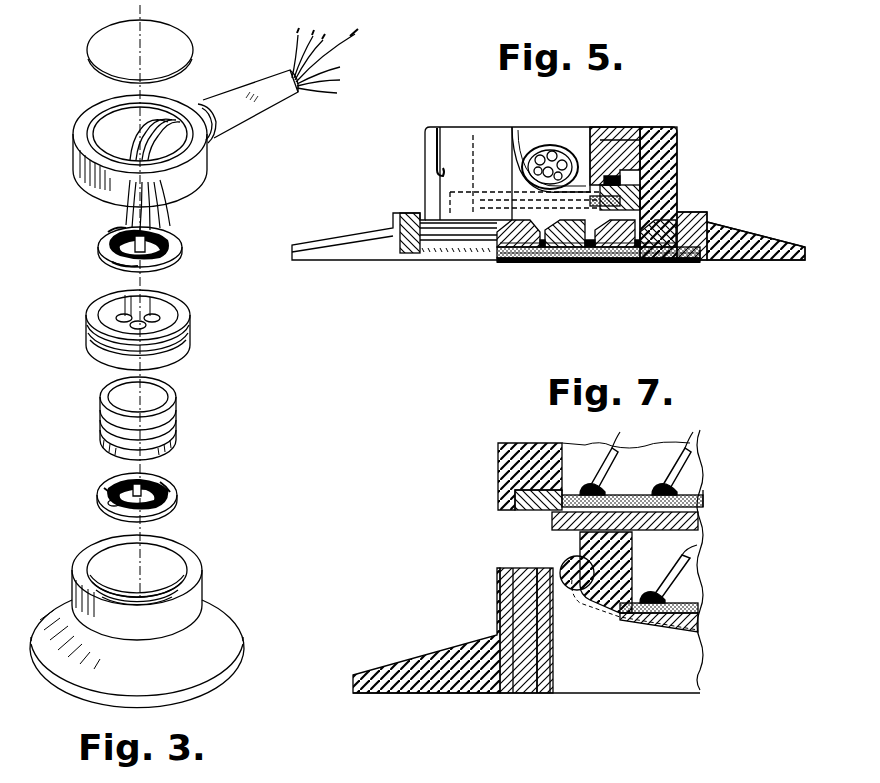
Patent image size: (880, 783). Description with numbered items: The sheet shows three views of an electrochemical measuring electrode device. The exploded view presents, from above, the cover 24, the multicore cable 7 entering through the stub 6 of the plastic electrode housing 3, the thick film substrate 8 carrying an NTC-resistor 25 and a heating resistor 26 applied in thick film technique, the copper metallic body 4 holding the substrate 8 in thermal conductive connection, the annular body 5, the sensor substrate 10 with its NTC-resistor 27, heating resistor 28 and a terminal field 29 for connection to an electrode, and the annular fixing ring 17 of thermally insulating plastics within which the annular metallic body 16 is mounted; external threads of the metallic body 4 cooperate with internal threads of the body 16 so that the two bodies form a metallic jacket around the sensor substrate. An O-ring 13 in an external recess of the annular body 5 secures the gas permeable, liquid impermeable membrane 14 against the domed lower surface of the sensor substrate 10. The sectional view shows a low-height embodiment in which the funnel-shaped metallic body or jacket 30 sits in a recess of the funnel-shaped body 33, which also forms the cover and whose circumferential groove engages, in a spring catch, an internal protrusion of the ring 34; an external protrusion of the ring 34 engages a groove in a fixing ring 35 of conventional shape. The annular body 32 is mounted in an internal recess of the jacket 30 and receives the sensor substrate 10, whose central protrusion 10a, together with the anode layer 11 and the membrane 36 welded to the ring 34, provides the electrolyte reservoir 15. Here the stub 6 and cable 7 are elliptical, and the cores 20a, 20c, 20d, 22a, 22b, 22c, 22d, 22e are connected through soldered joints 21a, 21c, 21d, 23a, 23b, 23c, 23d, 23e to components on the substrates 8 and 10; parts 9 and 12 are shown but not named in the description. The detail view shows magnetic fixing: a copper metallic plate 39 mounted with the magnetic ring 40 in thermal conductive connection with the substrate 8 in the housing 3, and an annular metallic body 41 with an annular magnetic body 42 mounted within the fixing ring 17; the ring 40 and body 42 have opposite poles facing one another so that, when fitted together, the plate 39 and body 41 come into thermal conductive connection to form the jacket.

In FIG. 3, the electrode housing 3 is at (190, 183).
In FIG. 7, the electrode housing 3 is at (498, 458).
In FIG. 3, the metallic body 4 is at (192, 336).
In FIG. 3, the annular body 5 is at (178, 430).
In FIG. 3, the stub 6 is at (198, 104).
In FIG. 5, the stub 6 is at (543, 145).
In FIG. 3, the multicore cable 7 is at (236, 90).
In FIG. 5, the multicore cable 7 is at (560, 142).
In FIG. 3, the thick film substrate 8 is at (180, 256).
In FIG. 5, the thick film substrate 8 is at (680, 185).
In FIG. 7, the thick film substrate 8 is at (703, 500).
In FIG. 5, the insert block 9 is at (630, 135).
In FIG. 3, the sensor substrate 10 is at (177, 508).
In FIG. 5, the sensor substrate 10 is at (515, 258).
In FIG. 7, the sensor substrate 10 is at (700, 612).
In FIG. 5, the central protrusion 10a is at (548, 260).
In FIG. 5, the anode layer 11 is at (590, 260).
In FIG. 7, the anode layer 11 is at (700, 625).
In FIG. 5, the spacer block 12 is at (678, 205).
In FIG. 7, the O-ring 13 is at (560, 570).
In FIG. 7, the membrane 14 is at (638, 622).
In FIG. 5, the electrolyte reservoir 15 is at (530, 260).
In FIG. 3, the annular metallic body 16 is at (185, 560).
In FIG. 3, the annular fixing ring 17 is at (236, 618).
In FIG. 7, the annular fixing ring 17 is at (430, 653).
In FIG. 7, the core 20a is at (685, 446).
In FIG. 5, the core 20c is at (600, 135).
In FIG. 7, the fourth core 20d is at (612, 446).
In FIG. 7, the soldered joint 21a is at (668, 490).
In FIG. 5, the soldered joint 21c is at (660, 175).
In FIG. 7, the soldered joint 21d is at (585, 482).
In FIG. 7, the core 22a is at (697, 556).
In FIG. 5, the core 22b is at (495, 240).
In FIG. 5, the core 22c is at (520, 255).
In FIG. 5, the core 22d is at (625, 258).
In FIG. 5, the core 22e is at (660, 258).
In FIG. 7, the soldered joint 23a is at (662, 598).
In FIG. 5, the soldered joint 23b is at (500, 255).
In FIG. 5, the soldered joint 23c is at (575, 262).
In FIG. 5, the soldered joint 23d is at (612, 262).
In FIG. 5, the soldered joint 23e is at (650, 262).
In FIG. 3, the cover 24 is at (176, 37).
In FIG. 3, the NTC-resistor 25 is at (112, 262).
In FIG. 3, the heating resistor 26 is at (108, 232).
In FIG. 3, the NTC-resistor 27 is at (170, 482).
In FIG. 3, the heating resistor 28 is at (104, 488).
In FIG. 3, the terminal field 29 is at (108, 506).
In FIG. 5, the funnel-shaped metallic body 30 is at (457, 210).
In FIG. 5, the annular body 32 is at (685, 262).
In FIG. 5, the funnel-shaped body 33 is at (457, 147).
In FIG. 5, the ring 34 is at (428, 152).
In FIG. 5, the fixing ring 35 is at (345, 252).
In FIG. 5, the membrane 36 is at (445, 262).
In FIG. 7, the metallic plate 39 is at (552, 522).
In FIG. 7, the magnetic ring 40 is at (515, 497).
In FIG. 7, the annular metallic body 41 is at (547, 683).
In FIG. 7, the annular magnetic body 42 is at (510, 600).